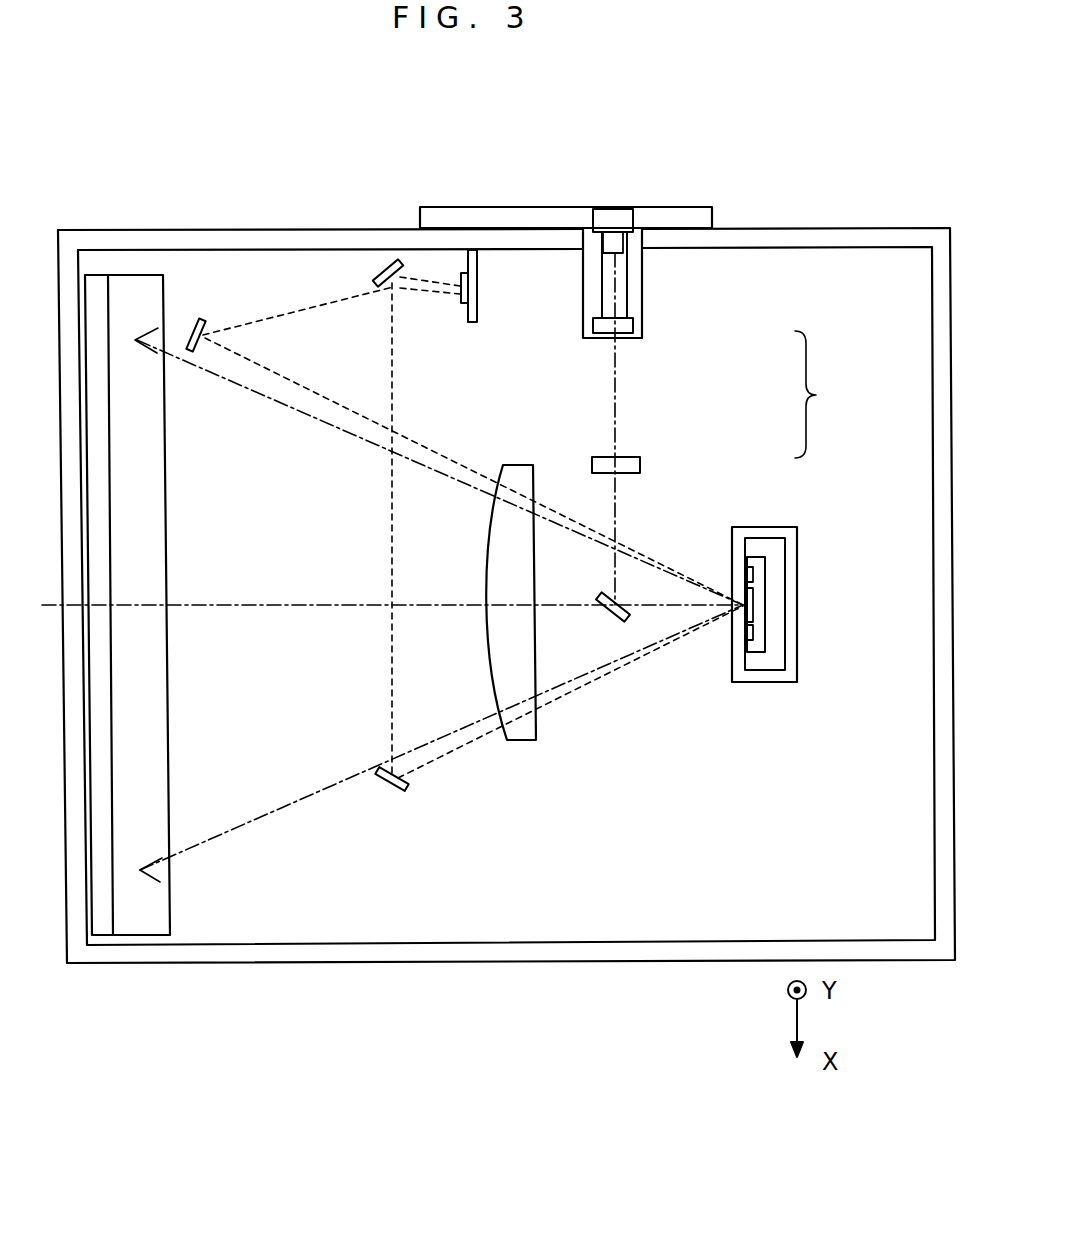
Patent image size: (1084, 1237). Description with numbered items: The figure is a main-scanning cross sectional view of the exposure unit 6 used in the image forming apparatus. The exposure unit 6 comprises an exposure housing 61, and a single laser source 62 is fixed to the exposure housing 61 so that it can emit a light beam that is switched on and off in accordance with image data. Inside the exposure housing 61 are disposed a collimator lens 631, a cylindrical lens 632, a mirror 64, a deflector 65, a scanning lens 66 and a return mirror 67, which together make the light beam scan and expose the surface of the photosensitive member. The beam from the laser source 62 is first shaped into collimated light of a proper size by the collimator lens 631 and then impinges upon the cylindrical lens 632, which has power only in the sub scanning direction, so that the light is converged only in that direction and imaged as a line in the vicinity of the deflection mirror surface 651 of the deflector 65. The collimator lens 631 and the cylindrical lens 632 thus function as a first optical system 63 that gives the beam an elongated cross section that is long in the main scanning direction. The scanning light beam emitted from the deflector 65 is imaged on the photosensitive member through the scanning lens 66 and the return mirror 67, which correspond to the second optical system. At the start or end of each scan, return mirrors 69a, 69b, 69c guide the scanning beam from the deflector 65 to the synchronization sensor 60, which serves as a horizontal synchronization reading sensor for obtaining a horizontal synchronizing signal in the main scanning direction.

The exposure unit 6 is at (893, 161).
The exposure housing 61 is at (293, 237).
The laser source 62 is at (617, 223).
The first optical system 63 is at (832, 394).
The collimator lens 631 is at (627, 323).
The cylindrical lens 632 is at (627, 465).
The synchronization sensor 60 is at (477, 283).
The mirror 64 is at (615, 622).
The deflector 65 is at (778, 527).
The deflection mirror surface 651 is at (742, 622).
The scanning lens 66 is at (520, 740).
The return mirror 67 is at (123, 292).
The return mirror 69a is at (388, 788).
The return mirror 69b is at (197, 320).
The return mirror 69c is at (383, 277).